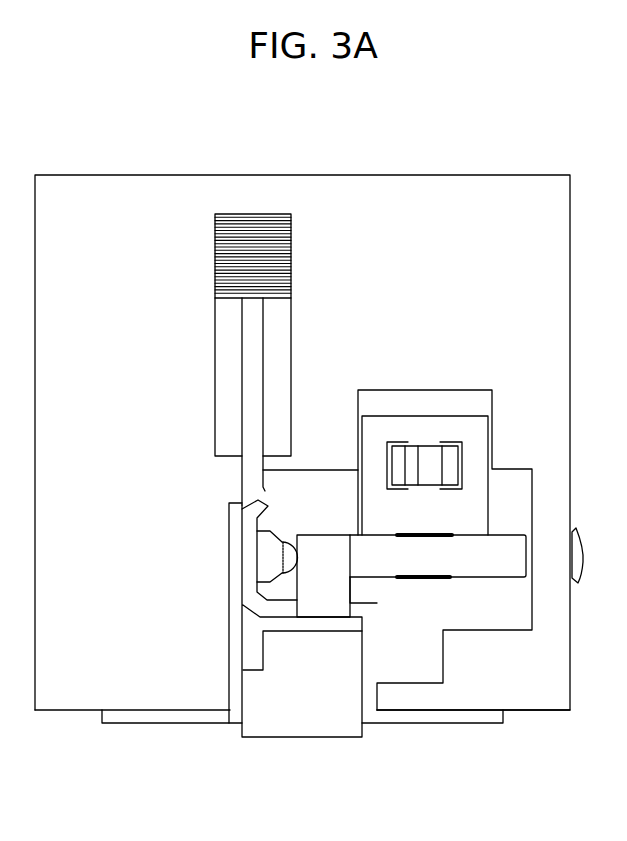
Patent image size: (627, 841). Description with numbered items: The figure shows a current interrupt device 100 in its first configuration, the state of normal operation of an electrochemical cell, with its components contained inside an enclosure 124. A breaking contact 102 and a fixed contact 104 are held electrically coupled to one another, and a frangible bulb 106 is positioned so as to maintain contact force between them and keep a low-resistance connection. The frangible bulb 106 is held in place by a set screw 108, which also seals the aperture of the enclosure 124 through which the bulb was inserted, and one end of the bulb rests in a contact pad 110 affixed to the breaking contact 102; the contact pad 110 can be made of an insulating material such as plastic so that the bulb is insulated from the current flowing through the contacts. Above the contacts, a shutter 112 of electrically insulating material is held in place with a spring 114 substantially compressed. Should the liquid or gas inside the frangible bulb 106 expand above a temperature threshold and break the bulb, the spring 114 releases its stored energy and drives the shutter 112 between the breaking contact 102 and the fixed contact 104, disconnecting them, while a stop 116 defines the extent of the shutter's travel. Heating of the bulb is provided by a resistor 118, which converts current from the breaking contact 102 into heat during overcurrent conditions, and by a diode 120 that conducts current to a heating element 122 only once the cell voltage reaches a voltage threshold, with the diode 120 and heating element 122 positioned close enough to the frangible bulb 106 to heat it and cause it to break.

The current interrupt device 100 is at (122, 126).
The breaking contact 102 is at (387, 713).
The fixed contact 104 is at (117, 717).
The frangible bulb 106 is at (495, 563).
The set screw 108 is at (578, 580).
The contact pad 110 is at (262, 577).
The shutter 112 is at (252, 445).
The spring 114 is at (250, 225).
The stop 116 is at (255, 690).
The resistor 118 is at (325, 608).
The diode 120 is at (433, 458).
The heating element 122 is at (438, 578).
The enclosure 124 is at (50, 693).